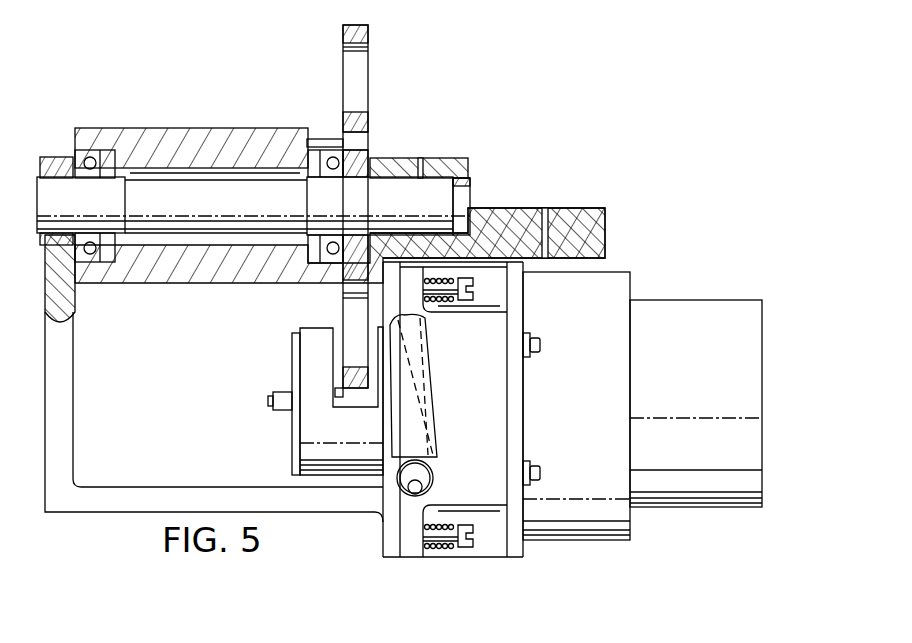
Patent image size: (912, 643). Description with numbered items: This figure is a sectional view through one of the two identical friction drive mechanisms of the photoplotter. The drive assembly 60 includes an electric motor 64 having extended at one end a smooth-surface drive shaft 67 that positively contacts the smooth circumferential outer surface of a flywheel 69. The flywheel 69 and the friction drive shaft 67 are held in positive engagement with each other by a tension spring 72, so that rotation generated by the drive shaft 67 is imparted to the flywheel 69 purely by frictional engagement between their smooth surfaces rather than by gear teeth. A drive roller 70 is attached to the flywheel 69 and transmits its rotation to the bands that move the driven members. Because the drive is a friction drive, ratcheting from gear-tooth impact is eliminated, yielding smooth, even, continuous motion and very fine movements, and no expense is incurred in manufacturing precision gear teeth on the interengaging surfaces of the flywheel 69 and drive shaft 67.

The drive assembly 60 is at (536, 166).
The electric motor 64 is at (687, 300).
The drive shaft 67 is at (358, 400).
The flywheel 69 is at (368, 29).
The drive roller 70 is at (233, 128).
The tension spring 72 is at (430, 343).